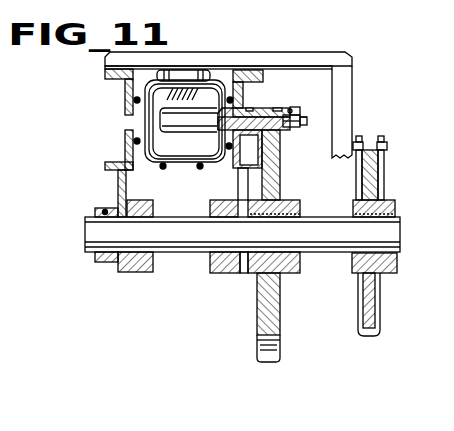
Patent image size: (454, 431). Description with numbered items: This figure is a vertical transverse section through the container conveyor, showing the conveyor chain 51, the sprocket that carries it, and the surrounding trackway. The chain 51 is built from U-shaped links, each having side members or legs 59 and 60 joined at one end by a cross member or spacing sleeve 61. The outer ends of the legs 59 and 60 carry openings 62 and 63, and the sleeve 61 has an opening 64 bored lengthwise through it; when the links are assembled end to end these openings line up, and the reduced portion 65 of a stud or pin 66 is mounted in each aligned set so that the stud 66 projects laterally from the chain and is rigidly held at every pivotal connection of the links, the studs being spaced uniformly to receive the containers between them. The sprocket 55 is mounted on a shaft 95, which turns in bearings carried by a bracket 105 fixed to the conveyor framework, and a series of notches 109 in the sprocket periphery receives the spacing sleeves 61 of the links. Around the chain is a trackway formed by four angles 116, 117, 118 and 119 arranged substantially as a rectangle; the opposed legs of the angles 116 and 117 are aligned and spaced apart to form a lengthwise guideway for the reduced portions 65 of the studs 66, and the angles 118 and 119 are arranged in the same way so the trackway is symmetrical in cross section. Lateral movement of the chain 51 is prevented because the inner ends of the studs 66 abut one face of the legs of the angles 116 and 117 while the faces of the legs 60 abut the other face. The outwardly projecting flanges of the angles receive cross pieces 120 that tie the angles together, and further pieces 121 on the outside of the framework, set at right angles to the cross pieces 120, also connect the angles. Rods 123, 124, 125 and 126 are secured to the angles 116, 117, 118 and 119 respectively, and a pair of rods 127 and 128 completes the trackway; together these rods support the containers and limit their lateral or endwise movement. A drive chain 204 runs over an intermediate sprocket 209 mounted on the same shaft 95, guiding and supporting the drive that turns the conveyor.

The chain 51 is at (290, 108).
The sprocket 55 is at (279, 326).
The side member or leg 59 is at (248, 110).
The side member or leg 60 is at (297, 110).
The cross member or spacing sleeve 61 is at (272, 110).
The opening 62 is at (247, 149).
The opening 63 is at (305, 124).
The opening 64 is at (280, 151).
The reduced portion 65 is at (295, 118).
The stud or pin 66 is at (180, 133).
The shaft 95 is at (401, 234).
The bracket 105 is at (118, 206).
The notch 109 is at (279, 350).
The angle 116 is at (250, 70).
The angle 117 is at (242, 190).
The angle 118 is at (108, 73).
The angle 119 is at (108, 166).
The cross piece 120 is at (352, 59).
The piece 121 is at (345, 80).
The rod 123 is at (236, 72).
The rod 124 is at (228, 150).
The rod 125 is at (134, 100).
The rod 126 is at (134, 141).
The rod 127 is at (203, 170).
The rod 128 is at (164, 170).
The chain 204 is at (385, 146).
The sprocket 209 is at (378, 297).